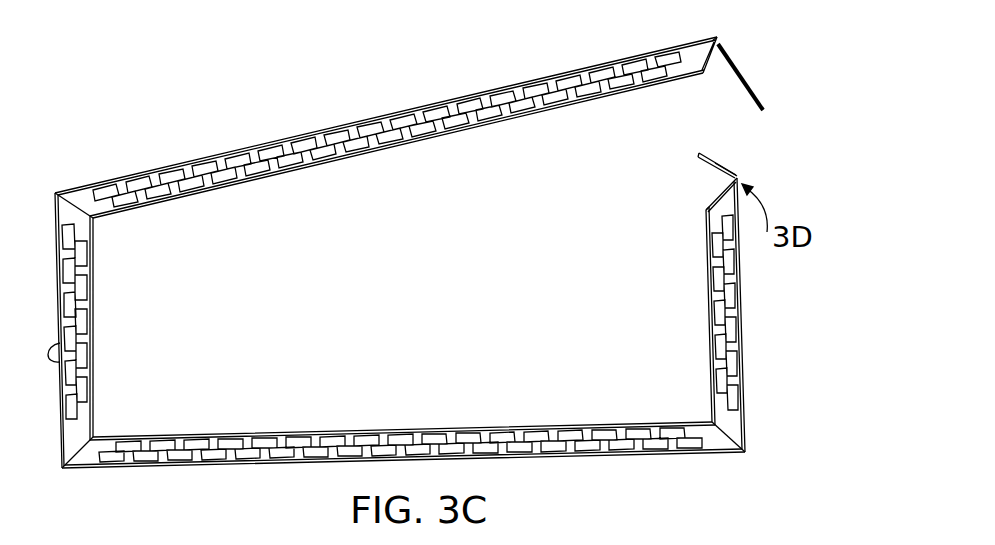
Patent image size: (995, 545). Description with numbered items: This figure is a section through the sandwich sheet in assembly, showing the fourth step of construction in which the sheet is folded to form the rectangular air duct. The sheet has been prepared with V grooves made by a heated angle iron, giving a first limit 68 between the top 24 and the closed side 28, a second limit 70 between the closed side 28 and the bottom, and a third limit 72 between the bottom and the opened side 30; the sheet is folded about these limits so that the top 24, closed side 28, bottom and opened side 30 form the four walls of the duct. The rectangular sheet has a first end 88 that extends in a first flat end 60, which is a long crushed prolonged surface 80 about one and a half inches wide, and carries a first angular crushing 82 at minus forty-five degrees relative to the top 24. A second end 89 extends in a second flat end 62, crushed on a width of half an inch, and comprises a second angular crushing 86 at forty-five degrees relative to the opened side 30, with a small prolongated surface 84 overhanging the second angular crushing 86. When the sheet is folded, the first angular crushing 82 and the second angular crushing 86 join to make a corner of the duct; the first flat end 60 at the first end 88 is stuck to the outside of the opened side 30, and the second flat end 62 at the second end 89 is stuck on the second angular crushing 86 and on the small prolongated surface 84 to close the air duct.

The top 24 is at (385, 113).
The closed side 28 is at (93, 330).
The opened side 30 is at (746, 322).
The first flat end 60 is at (735, 67).
The second flat end 62 is at (717, 167).
The first limit 68 is at (78, 210).
The second limit 70 is at (88, 440).
The third limit 72 is at (717, 422).
The long crushed prolonged surface 80 is at (763, 110).
The first angular crushing 82 is at (707, 68).
The small prolongated surface 84 is at (703, 162).
The second angular crushing 86 is at (707, 200).
The first end 88 is at (716, 36).
The second end 89 is at (732, 180).